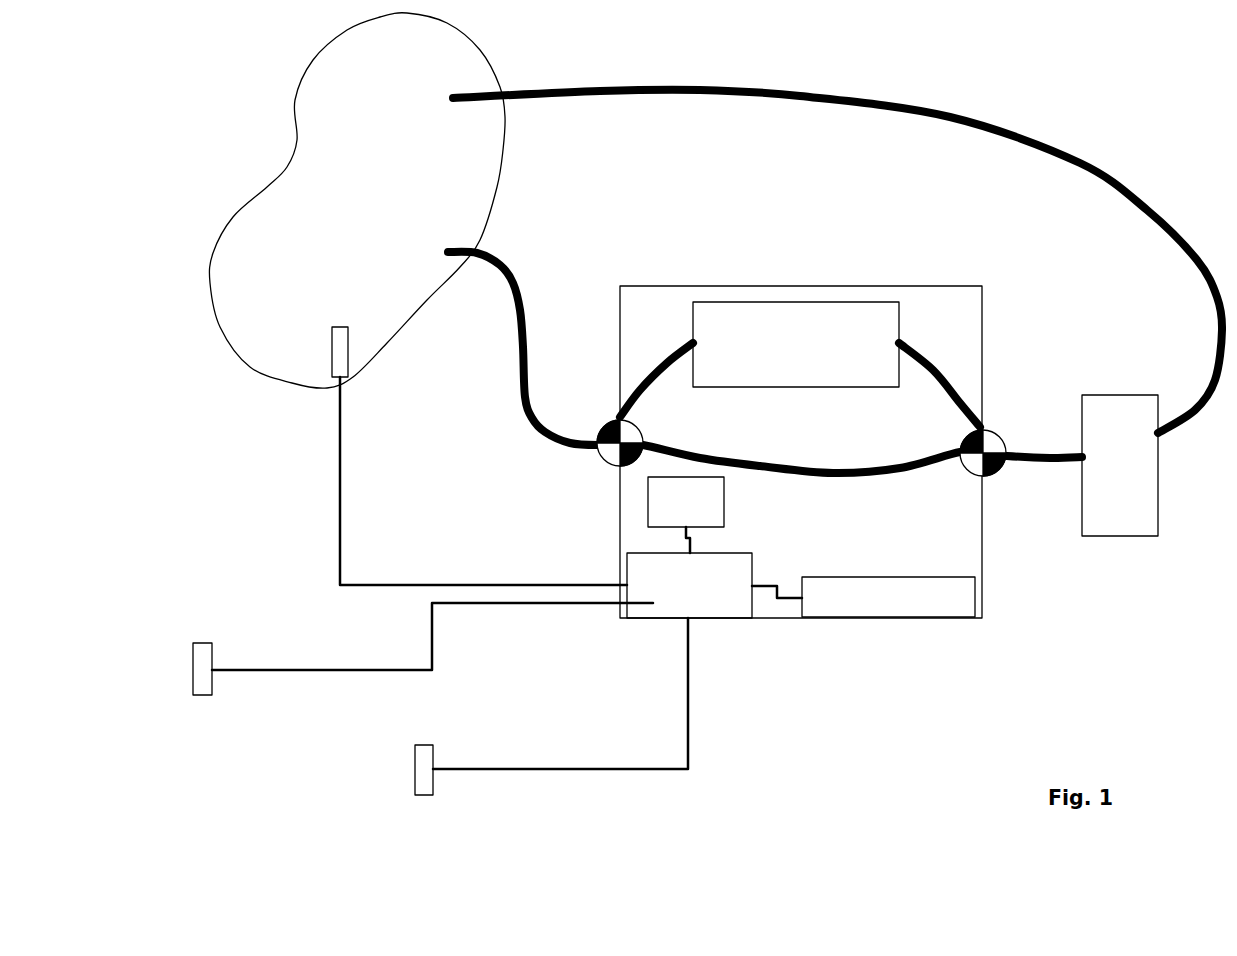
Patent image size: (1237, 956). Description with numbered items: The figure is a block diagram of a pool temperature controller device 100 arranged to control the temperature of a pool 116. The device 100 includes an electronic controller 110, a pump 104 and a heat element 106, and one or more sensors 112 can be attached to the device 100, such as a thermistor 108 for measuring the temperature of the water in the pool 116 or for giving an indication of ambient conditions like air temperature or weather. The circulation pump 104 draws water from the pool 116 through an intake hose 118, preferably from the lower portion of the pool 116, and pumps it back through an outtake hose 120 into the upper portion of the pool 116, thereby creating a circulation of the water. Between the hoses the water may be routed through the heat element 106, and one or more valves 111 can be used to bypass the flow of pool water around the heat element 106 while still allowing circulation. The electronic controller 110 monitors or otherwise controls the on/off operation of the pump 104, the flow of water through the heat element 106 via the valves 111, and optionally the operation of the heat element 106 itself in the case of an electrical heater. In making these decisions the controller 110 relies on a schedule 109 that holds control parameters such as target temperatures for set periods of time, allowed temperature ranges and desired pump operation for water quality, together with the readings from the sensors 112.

The pool temperature controller device 100 is at (918, 547).
The pump 104 is at (1133, 516).
The heat element 106 is at (796, 345).
The thermistor 108 is at (332, 355).
The schedule 109 is at (648, 500).
The electronic controller 110 is at (718, 593).
The valve 111 is at (613, 463).
The sensor 112 is at (833, 593).
The pool 116 is at (392, 216).
The intake hose 118 is at (517, 280).
The outtake hose 120 is at (732, 85).